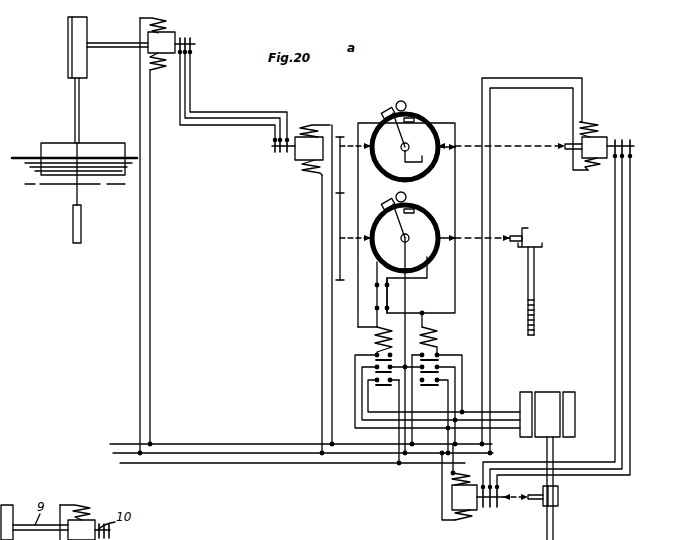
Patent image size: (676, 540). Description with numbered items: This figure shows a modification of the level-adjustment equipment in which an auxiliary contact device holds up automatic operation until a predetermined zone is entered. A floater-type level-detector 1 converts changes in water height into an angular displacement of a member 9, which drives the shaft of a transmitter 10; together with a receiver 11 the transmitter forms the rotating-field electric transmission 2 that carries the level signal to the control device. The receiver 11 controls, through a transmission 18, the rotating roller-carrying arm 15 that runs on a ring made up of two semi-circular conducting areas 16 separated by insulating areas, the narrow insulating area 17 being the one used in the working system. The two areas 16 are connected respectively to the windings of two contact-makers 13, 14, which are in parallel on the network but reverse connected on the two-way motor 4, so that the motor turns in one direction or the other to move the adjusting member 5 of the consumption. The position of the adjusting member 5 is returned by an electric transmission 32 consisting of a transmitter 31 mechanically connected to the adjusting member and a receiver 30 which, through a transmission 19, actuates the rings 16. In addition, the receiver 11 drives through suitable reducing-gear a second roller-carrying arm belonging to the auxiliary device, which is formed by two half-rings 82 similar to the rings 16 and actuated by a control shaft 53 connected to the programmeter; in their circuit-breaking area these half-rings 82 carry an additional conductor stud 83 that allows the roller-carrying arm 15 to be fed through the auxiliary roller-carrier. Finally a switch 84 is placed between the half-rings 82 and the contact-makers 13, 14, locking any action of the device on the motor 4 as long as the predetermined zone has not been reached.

The level-detector 1 is at (70, 46).
The electric transmission 2 is at (242, 112).
The motor 4 is at (572, 418).
The adjusting member 5 is at (554, 535).
The member 9 is at (107, 43).
The transmitter 10 is at (166, 38).
The receiver 11 is at (302, 157).
The contact-maker 13 is at (374, 334).
The contact-maker 14 is at (440, 344).
The rotating arm 15 is at (397, 104).
The semi-circular areas 16 is at (388, 172).
The insulating area 17 is at (423, 117).
The transmission 18 is at (335, 140).
The transmission 19 is at (509, 147).
The receiver 30 is at (604, 142).
The transmitter 31 is at (470, 500).
The electric transmission 32 is at (620, 337).
The control shaft 53 is at (537, 284).
The half-rings 82 is at (374, 249).
The conductor stud 83 is at (426, 216).
The switch 84 is at (390, 297).